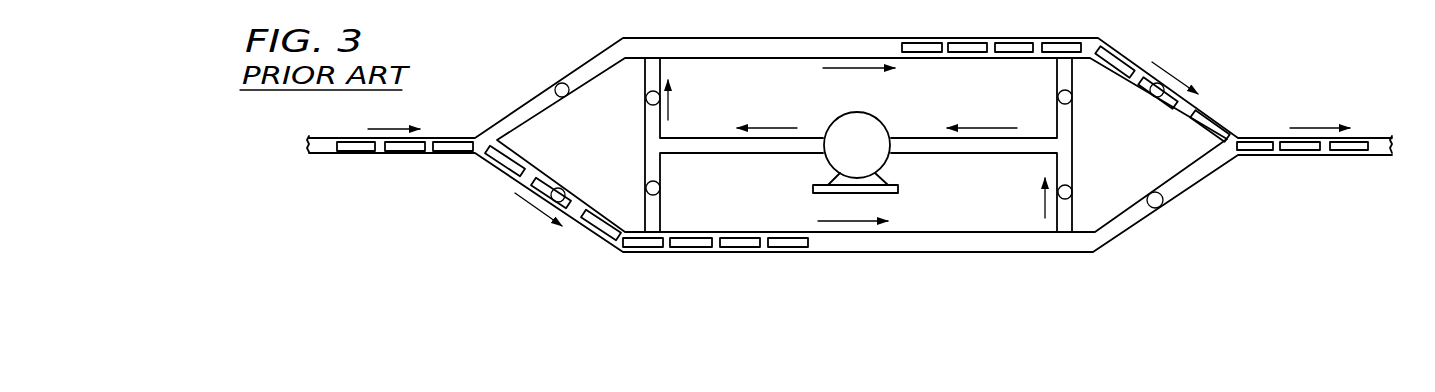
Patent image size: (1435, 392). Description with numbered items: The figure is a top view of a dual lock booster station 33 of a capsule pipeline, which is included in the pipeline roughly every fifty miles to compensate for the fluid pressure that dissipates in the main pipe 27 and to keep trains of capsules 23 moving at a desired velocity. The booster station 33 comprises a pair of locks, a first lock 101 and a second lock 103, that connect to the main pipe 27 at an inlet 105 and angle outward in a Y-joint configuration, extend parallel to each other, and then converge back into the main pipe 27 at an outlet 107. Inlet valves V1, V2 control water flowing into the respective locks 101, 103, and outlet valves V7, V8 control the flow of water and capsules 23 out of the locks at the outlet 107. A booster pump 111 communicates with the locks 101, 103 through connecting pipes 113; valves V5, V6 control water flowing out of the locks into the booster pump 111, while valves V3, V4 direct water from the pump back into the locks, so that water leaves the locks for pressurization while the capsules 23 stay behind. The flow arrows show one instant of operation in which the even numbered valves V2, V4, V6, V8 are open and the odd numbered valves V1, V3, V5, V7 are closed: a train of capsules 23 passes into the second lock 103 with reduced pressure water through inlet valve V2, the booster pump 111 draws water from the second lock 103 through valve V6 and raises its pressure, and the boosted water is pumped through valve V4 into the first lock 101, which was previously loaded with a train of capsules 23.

The capsules 23 is at (352, 140).
The main pipe 27 is at (378, 157).
The booster station 33 is at (1072, 259).
The first lock 101 is at (767, 38).
The second lock 103 is at (860, 252).
The inlet 105 is at (475, 160).
The outlet 107 is at (1240, 137).
The booster pump 111 is at (888, 156).
The connecting pipes 113 is at (662, 212).
The inlet valve V1 is at (562, 97).
The inlet valve V2 is at (558, 188).
The valve V3 is at (646, 188).
The valve V4 is at (646, 97).
The valve V5 is at (1072, 97).
The valve V6 is at (1072, 192).
The outlet valve V7 is at (1158, 192).
The outlet valve V8 is at (1150, 97).